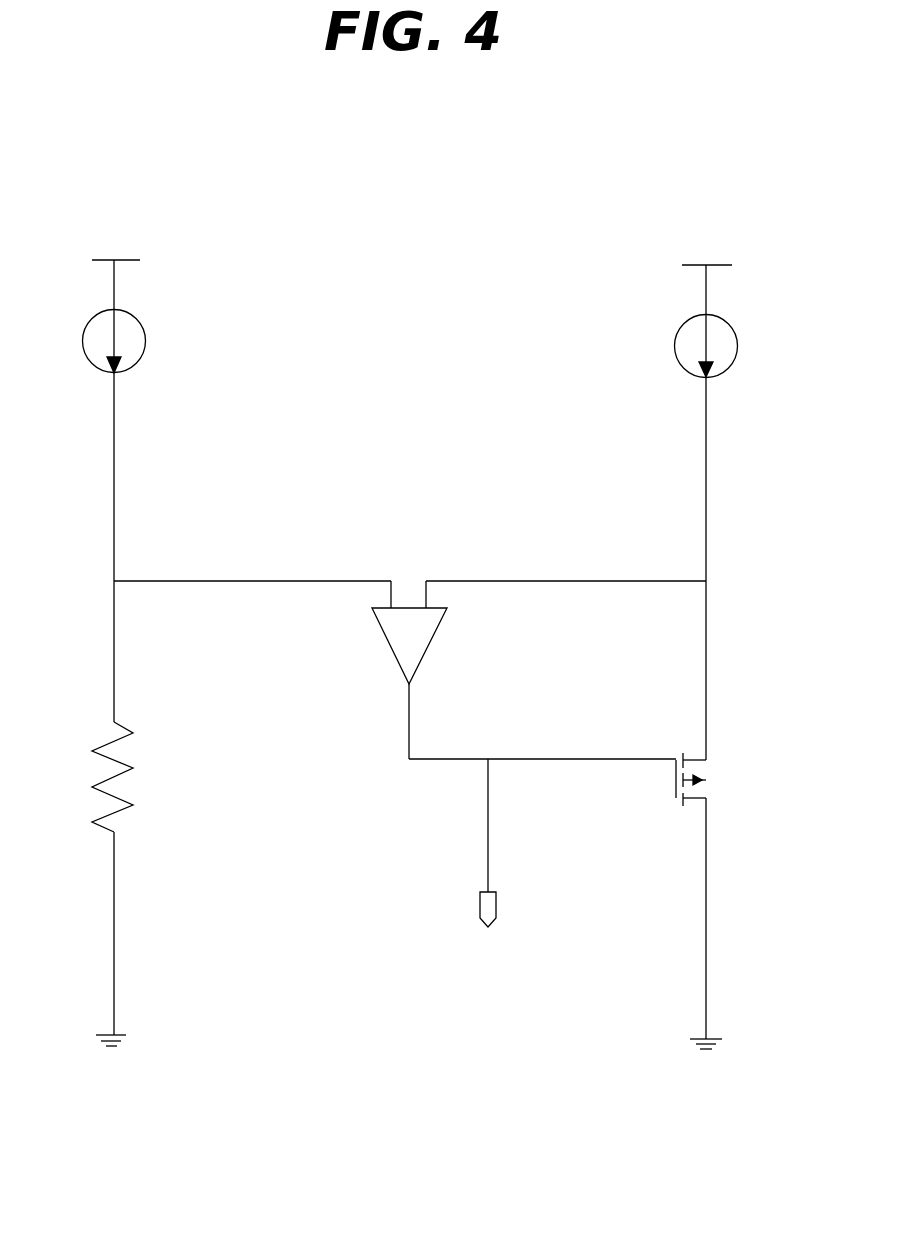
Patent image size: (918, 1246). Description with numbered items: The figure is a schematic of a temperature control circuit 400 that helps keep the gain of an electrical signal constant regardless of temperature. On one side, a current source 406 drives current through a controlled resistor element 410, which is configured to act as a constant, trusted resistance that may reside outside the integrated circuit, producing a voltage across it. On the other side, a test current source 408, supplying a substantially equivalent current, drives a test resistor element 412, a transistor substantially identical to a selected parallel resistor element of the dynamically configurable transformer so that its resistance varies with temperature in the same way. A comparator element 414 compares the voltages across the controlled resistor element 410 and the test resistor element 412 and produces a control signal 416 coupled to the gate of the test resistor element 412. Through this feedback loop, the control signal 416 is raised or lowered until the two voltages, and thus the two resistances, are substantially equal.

The temperature control circuit 400 is at (439, 558).
The current source 406 is at (152, 316).
The test current source 408 is at (744, 321).
The controlled resistor element 410 is at (99, 777).
The test resistor element 412 is at (707, 779).
The comparator element 414 is at (409, 646).
The control signal 416 is at (488, 856).